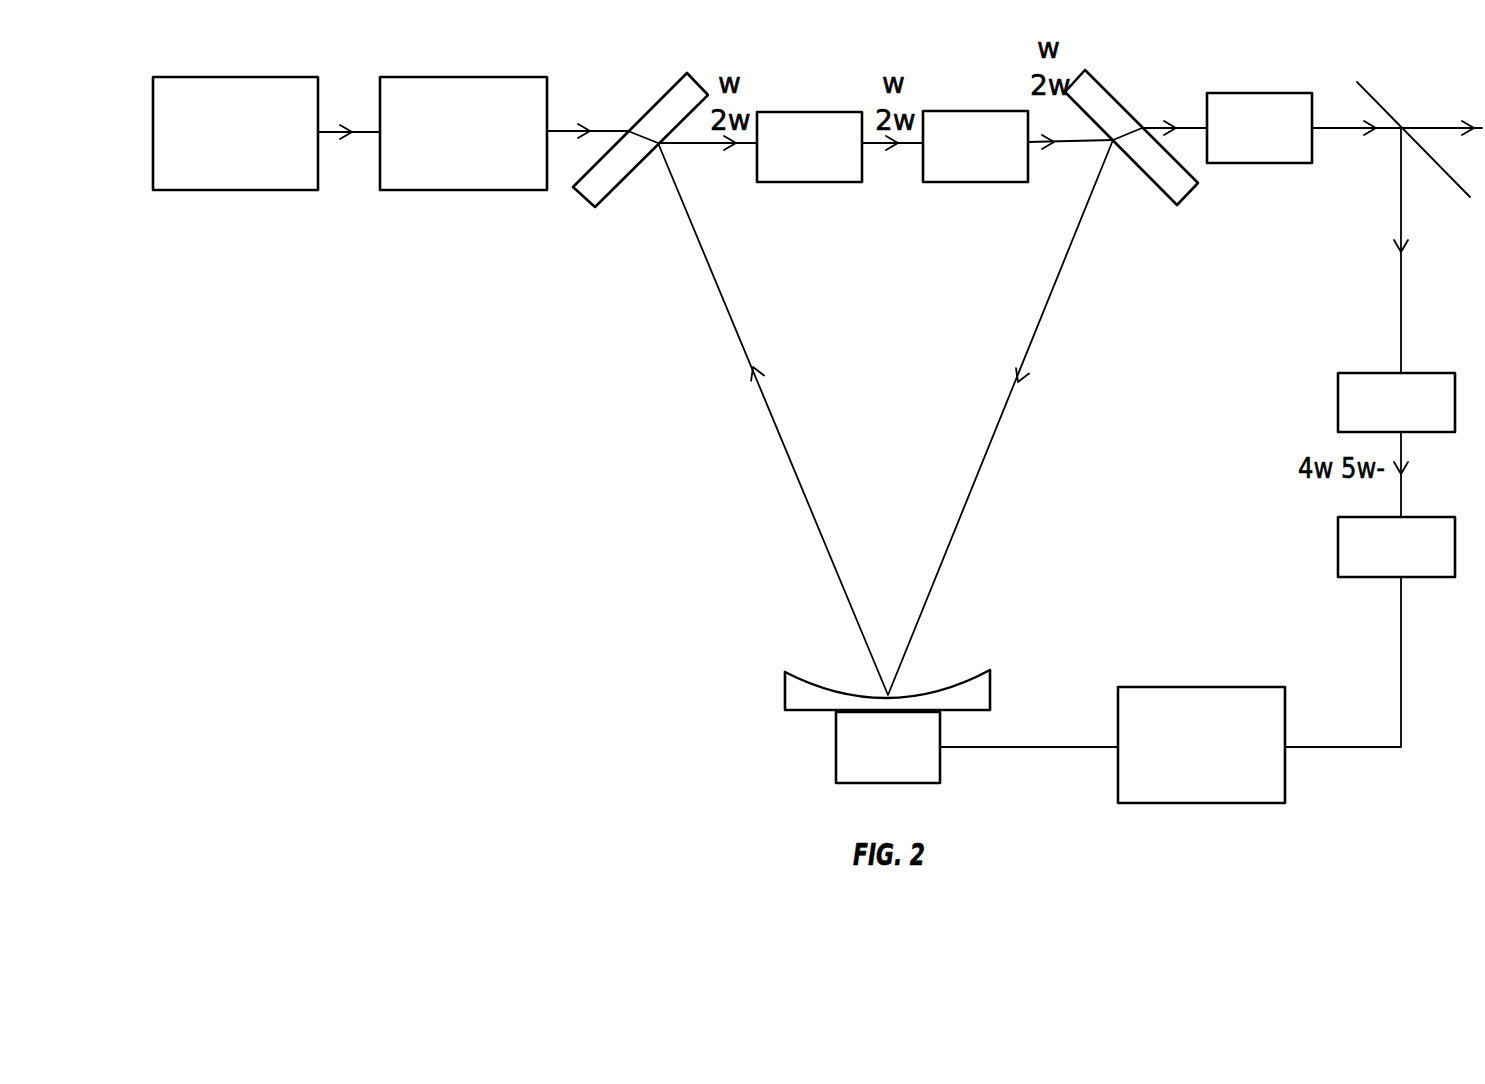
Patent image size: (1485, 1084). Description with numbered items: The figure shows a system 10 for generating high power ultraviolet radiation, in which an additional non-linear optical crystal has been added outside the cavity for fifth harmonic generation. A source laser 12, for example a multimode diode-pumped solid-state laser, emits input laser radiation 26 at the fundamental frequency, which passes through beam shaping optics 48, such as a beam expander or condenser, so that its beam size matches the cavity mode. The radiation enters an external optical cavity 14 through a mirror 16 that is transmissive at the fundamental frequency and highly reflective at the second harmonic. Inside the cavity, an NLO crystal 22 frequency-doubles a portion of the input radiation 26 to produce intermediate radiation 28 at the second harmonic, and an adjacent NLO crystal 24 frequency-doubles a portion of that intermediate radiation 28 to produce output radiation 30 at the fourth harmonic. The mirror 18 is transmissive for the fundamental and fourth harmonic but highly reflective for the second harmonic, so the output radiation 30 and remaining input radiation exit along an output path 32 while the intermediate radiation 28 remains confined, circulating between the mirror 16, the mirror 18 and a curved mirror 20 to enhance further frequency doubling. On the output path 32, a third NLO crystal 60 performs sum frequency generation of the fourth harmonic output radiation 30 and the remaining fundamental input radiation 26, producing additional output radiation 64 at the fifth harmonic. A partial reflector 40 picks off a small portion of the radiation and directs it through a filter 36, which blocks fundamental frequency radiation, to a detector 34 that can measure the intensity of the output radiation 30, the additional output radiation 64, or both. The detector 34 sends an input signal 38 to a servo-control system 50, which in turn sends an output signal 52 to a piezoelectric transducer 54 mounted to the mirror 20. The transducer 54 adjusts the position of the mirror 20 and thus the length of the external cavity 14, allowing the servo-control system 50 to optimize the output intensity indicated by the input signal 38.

The system 10 is at (392, 606).
The source laser 12 is at (245, 77).
The external optical cavity 14 is at (607, 471).
The mirror 16 is at (685, 75).
The mirror 18 is at (1087, 72).
The mirror 20 is at (990, 672).
The NLO crystal 22 is at (803, 112).
The NLO crystal 24 is at (997, 110).
The input laser radiation 26 is at (608, 128).
The intermediate radiation 28 is at (868, 143).
The output radiation 30 is at (1070, 144).
The output path 32 is at (1200, 128).
The detector 34 is at (1417, 515).
The filter 36 is at (1415, 372).
The input signal 38 is at (1399, 635).
The partial reflector 40 is at (1375, 98).
The beam shaping optics 48 is at (473, 77).
The servo-control system 50 is at (1172, 687).
The output signal 52 is at (1010, 747).
The piezoelectric transducer 54 is at (835, 753).
The third NLO crystal 60 is at (1273, 93).
The additional output radiation 64 is at (1327, 129).